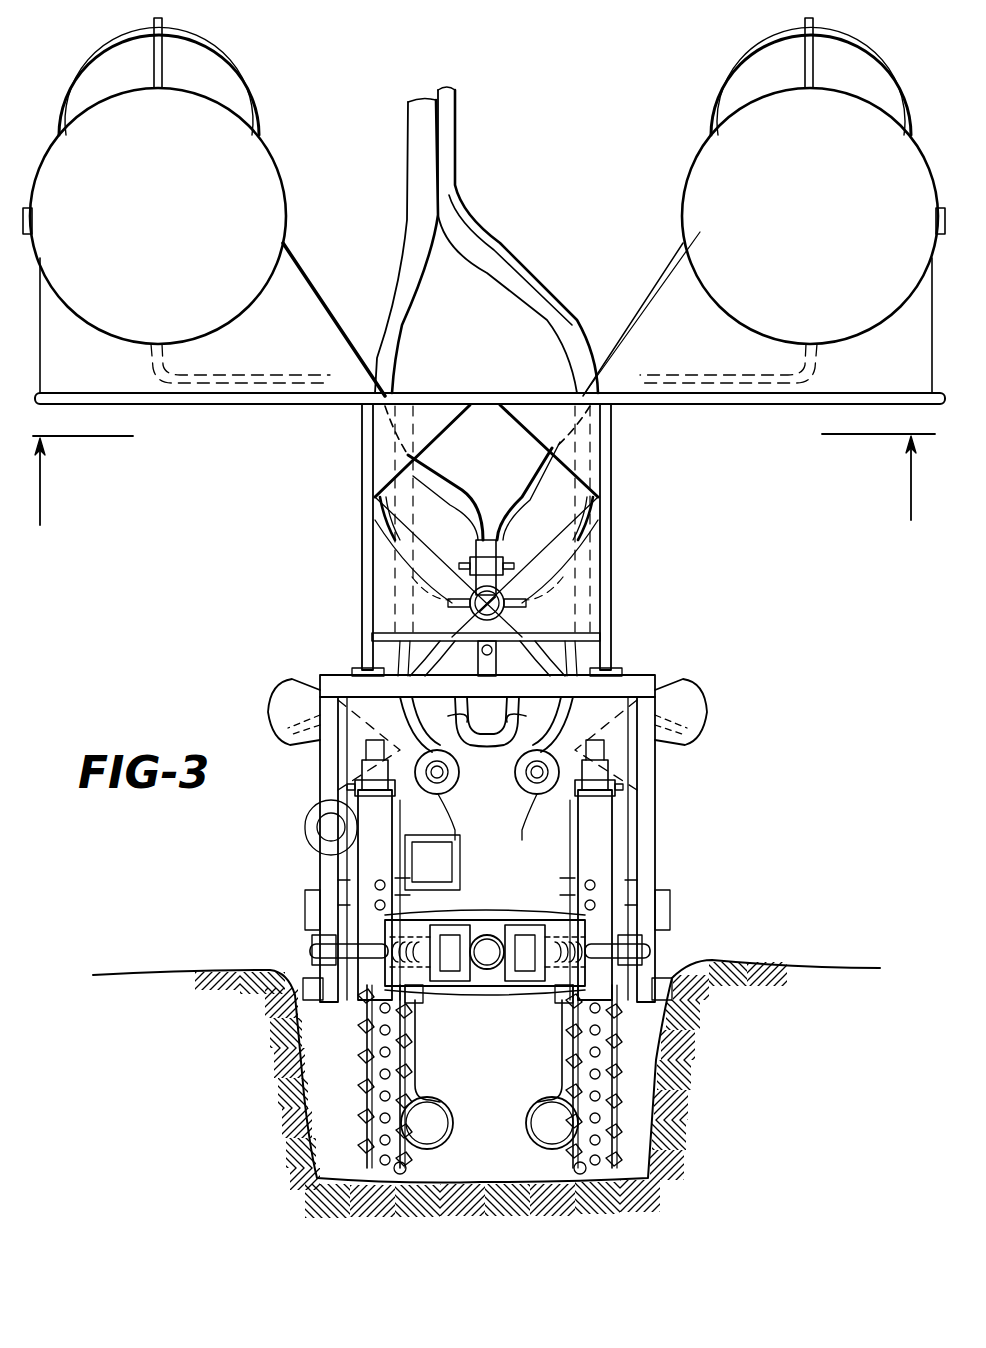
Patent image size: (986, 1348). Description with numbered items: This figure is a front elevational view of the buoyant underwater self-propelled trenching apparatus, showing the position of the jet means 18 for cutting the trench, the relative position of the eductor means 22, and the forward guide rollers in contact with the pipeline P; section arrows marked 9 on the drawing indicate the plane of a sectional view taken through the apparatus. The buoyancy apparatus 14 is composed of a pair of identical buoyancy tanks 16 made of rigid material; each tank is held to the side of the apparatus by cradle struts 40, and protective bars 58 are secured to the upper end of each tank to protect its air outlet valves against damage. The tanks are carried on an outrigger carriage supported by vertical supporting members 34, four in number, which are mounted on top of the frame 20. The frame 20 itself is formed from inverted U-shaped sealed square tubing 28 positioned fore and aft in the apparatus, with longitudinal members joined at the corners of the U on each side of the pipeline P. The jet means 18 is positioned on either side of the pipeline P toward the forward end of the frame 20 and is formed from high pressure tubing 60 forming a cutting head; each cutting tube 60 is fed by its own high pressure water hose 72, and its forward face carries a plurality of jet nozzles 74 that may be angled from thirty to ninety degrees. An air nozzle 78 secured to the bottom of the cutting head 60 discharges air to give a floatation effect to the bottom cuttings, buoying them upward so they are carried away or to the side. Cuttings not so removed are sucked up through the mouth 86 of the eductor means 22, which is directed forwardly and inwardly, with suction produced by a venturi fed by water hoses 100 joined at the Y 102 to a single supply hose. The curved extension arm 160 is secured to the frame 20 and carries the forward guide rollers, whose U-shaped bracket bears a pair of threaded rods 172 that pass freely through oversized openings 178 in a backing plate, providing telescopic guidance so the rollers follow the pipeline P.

The section line 9- 9 is at (484, 490).
The buoyancy apparatus 14 is at (270, 428).
The buoyancy tanks 16 is at (281, 104).
The jet means 18 is at (364, 1118).
The frame 20 is at (669, 788).
The eductor means 22 is at (272, 690).
The inverted U-shaped sealed square tubing 28 is at (322, 761).
The vertical supporting members 34 is at (360, 482).
The cradle struts 40 is at (656, 290).
The protective bars 58 is at (232, 58).
The high pressure tubing / cutting tube 60 is at (600, 830).
The high pressure water hose 72 is at (366, 780).
The jet nozzles 74 is at (362, 1027).
The air nozzle 78 is at (408, 1166).
The mouth of eductor tube 86 is at (534, 1100).
The water hoses 100 is at (516, 772).
The Y 102 is at (534, 706).
The curved extension arm 160 is at (612, 950).
The threaded rods 172 is at (422, 1000).
The openings 178 is at (615, 920).
The pipeline P is at (488, 922).